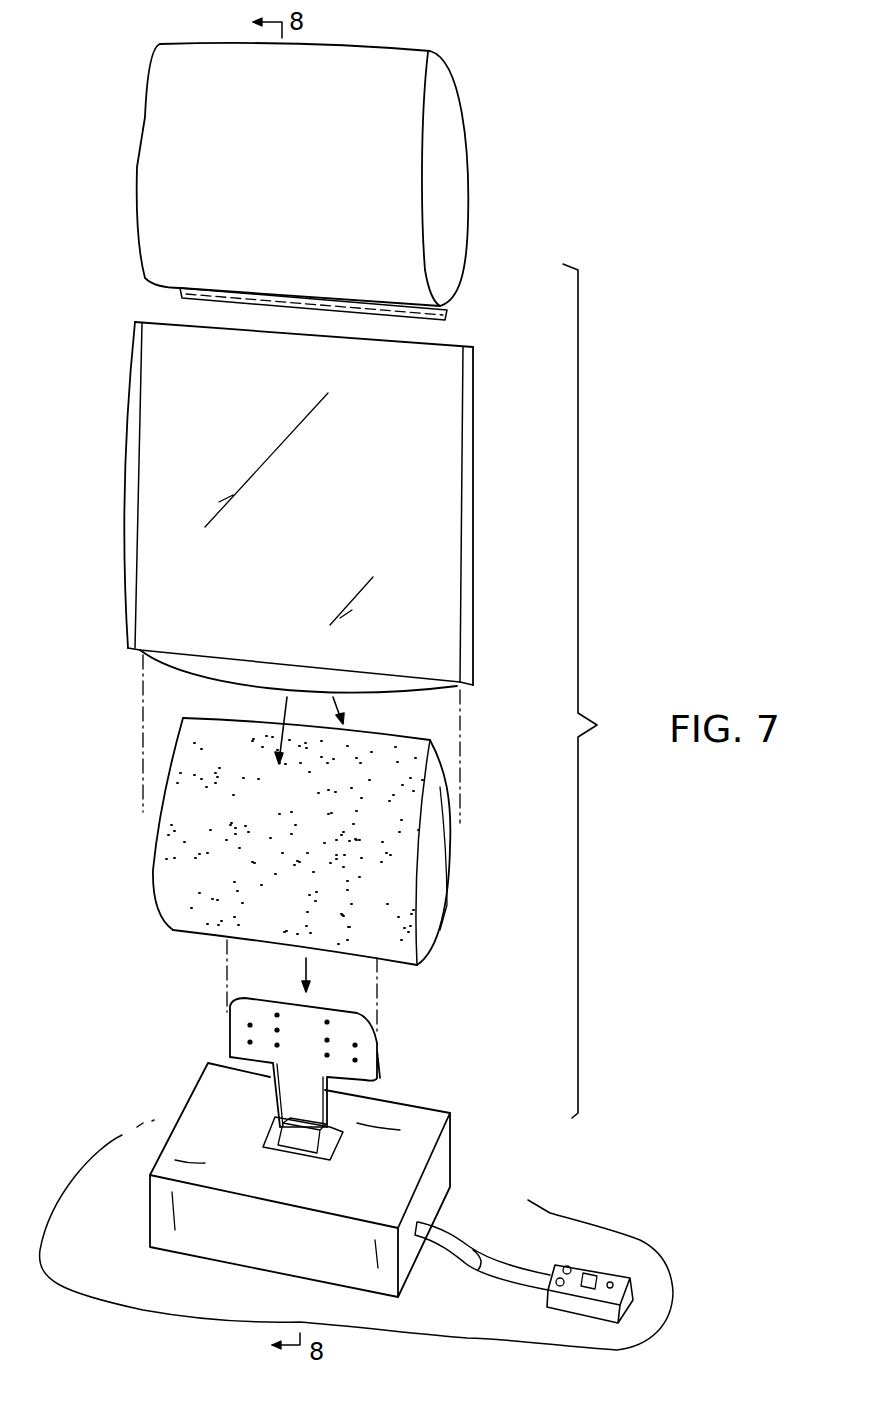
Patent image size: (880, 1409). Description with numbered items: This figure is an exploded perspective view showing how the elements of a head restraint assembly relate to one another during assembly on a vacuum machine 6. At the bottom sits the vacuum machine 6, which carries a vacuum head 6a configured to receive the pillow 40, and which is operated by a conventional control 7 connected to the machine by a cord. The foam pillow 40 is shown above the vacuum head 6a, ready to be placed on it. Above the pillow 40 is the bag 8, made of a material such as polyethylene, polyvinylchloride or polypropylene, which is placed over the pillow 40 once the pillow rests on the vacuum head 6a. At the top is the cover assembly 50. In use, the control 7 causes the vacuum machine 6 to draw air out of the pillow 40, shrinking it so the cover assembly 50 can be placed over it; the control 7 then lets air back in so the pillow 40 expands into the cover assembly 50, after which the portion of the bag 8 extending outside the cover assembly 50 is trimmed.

The cover assembly 50 is at (480, 166).
The bag 8 is at (473, 530).
The pillow 40 is at (450, 892).
The vacuum head 6a is at (378, 1057).
The vacuum machine 6 is at (448, 1115).
The control 7 is at (633, 1277).